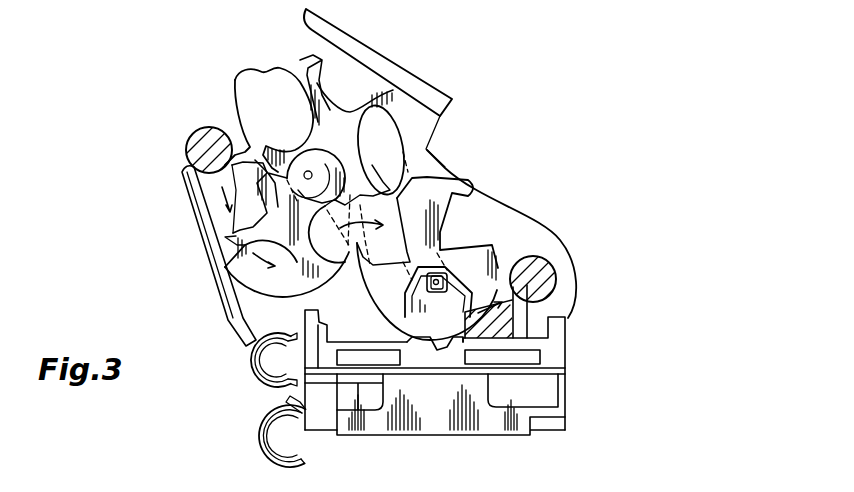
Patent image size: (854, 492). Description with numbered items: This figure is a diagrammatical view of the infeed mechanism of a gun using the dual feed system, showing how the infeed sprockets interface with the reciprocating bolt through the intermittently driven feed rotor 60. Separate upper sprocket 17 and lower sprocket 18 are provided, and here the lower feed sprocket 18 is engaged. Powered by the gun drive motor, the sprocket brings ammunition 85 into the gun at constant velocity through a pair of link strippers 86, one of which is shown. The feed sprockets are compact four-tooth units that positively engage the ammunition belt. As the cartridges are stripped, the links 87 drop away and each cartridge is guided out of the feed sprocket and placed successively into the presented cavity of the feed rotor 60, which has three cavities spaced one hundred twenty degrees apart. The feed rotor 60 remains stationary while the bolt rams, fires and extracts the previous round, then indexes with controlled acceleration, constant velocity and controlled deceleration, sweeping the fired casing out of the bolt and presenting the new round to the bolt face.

The upper sprocket 17 is at (313, 67).
The ammunition 85 is at (190, 137).
The link strippers 86 is at (192, 204).
The lower sprocket 18 is at (240, 247).
The feed rotor 60 is at (447, 170).
The links 87 is at (258, 434).